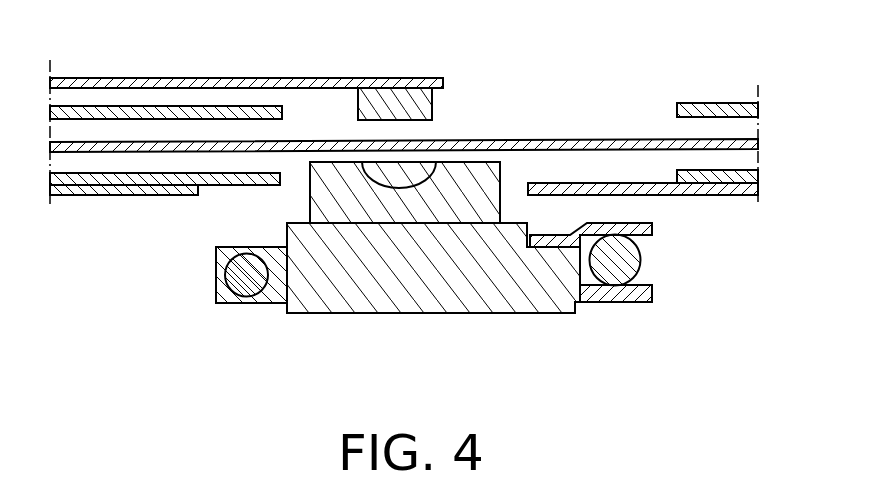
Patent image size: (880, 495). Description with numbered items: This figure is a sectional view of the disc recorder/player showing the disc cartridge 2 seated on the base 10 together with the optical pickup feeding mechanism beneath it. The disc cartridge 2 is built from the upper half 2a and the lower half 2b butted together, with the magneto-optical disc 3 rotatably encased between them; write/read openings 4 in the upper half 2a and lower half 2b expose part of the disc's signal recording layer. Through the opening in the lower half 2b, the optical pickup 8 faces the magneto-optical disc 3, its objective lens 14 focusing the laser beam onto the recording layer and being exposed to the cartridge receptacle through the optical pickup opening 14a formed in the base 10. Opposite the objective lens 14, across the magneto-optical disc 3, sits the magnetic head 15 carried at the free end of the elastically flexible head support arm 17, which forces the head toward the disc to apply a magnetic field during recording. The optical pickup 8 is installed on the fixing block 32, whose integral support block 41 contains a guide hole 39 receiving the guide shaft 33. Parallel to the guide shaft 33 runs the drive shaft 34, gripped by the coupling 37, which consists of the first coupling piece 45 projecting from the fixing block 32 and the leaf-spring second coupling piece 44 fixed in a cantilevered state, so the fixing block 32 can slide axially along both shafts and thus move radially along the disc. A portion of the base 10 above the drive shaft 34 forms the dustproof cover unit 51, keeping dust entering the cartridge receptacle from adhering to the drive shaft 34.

The disc cartridge 2 is at (774, 137).
The upper half 2a is at (748, 112).
The lower half 2b is at (755, 170).
The magneto-optical disc 3 is at (589, 139).
The write/read openings 4 is at (284, 112).
The optical pickup 8 is at (490, 186).
The base 10 is at (753, 193).
The objective lens 14 is at (410, 172).
The optical pickup opening 14a is at (200, 195).
The magnetic head 15 is at (392, 100).
The head support arm 17 is at (192, 78).
The fixing block 32 is at (433, 300).
The guide shaft 33 is at (247, 284).
The drive shaft 34 is at (615, 270).
The coupling 37 is at (672, 286).
The guide hole 39 is at (226, 268).
The support block 41 is at (222, 294).
The second coupling piece 44 is at (652, 228).
The first coupling piece 45 is at (652, 292).
The dustproof cover unit 51 is at (615, 183).